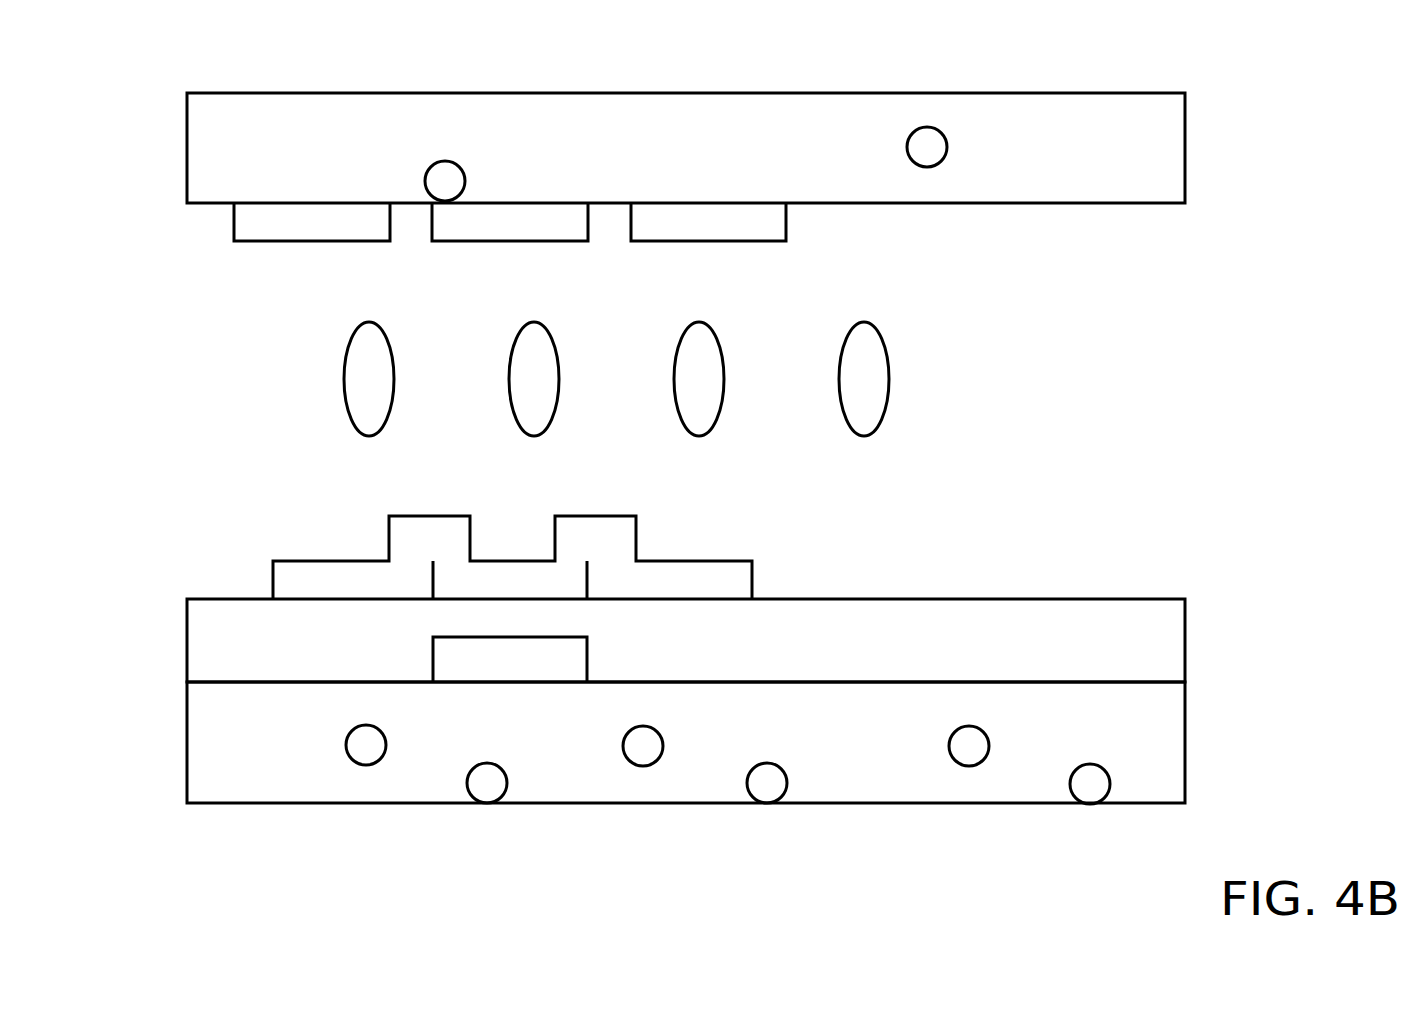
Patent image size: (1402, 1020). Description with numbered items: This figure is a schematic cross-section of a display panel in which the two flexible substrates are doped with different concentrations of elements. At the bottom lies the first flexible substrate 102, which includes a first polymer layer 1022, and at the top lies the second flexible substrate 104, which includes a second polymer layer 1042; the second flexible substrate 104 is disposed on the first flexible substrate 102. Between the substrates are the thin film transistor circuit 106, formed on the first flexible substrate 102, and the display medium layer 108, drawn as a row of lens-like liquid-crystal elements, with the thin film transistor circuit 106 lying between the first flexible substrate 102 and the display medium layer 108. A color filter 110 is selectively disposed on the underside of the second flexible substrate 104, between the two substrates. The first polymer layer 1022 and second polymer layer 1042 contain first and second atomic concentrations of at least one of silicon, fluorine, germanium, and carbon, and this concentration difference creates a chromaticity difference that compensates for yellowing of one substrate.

The first flexible substrate 102 is at (186, 682).
The first polymer layer 1022 is at (268, 762).
The second flexible substrate 104 is at (186, 93).
The second polymer layer 1042 is at (308, 132).
The thin film transistor circuit 106 is at (186, 517).
The display medium layer 108 is at (277, 378).
The color filter 110 is at (215, 224).